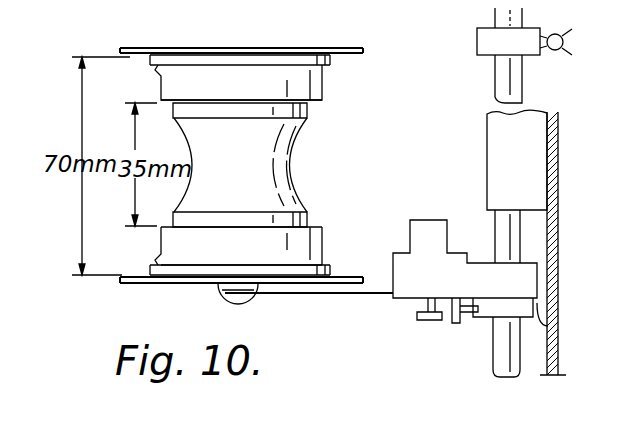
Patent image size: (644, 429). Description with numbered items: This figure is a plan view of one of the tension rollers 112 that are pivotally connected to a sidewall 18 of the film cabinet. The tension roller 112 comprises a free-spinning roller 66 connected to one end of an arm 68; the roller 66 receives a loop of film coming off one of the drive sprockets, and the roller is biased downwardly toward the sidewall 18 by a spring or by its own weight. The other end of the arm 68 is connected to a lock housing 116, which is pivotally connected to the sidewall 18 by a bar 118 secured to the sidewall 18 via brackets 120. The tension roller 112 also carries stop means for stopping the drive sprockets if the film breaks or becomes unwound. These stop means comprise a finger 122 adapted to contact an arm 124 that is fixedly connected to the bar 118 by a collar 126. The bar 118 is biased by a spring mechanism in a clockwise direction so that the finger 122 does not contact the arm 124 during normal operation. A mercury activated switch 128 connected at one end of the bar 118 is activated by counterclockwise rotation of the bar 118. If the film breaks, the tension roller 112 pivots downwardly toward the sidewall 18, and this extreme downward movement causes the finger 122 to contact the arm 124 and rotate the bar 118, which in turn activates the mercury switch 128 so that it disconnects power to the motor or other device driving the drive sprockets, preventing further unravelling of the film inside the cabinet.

The sidewall 18 is at (557, 130).
The free-spinning roller 66 is at (190, 46).
The arm 68 is at (342, 296).
The tension roller 112 is at (368, 40).
The lock housing 116 is at (403, 299).
The bar 118 is at (497, 82).
The bracket 120 is at (488, 142).
The finger 122 is at (443, 325).
The arm 124 is at (463, 324).
The collar 126 is at (548, 326).
The mercury activated switch 128 is at (558, 27).